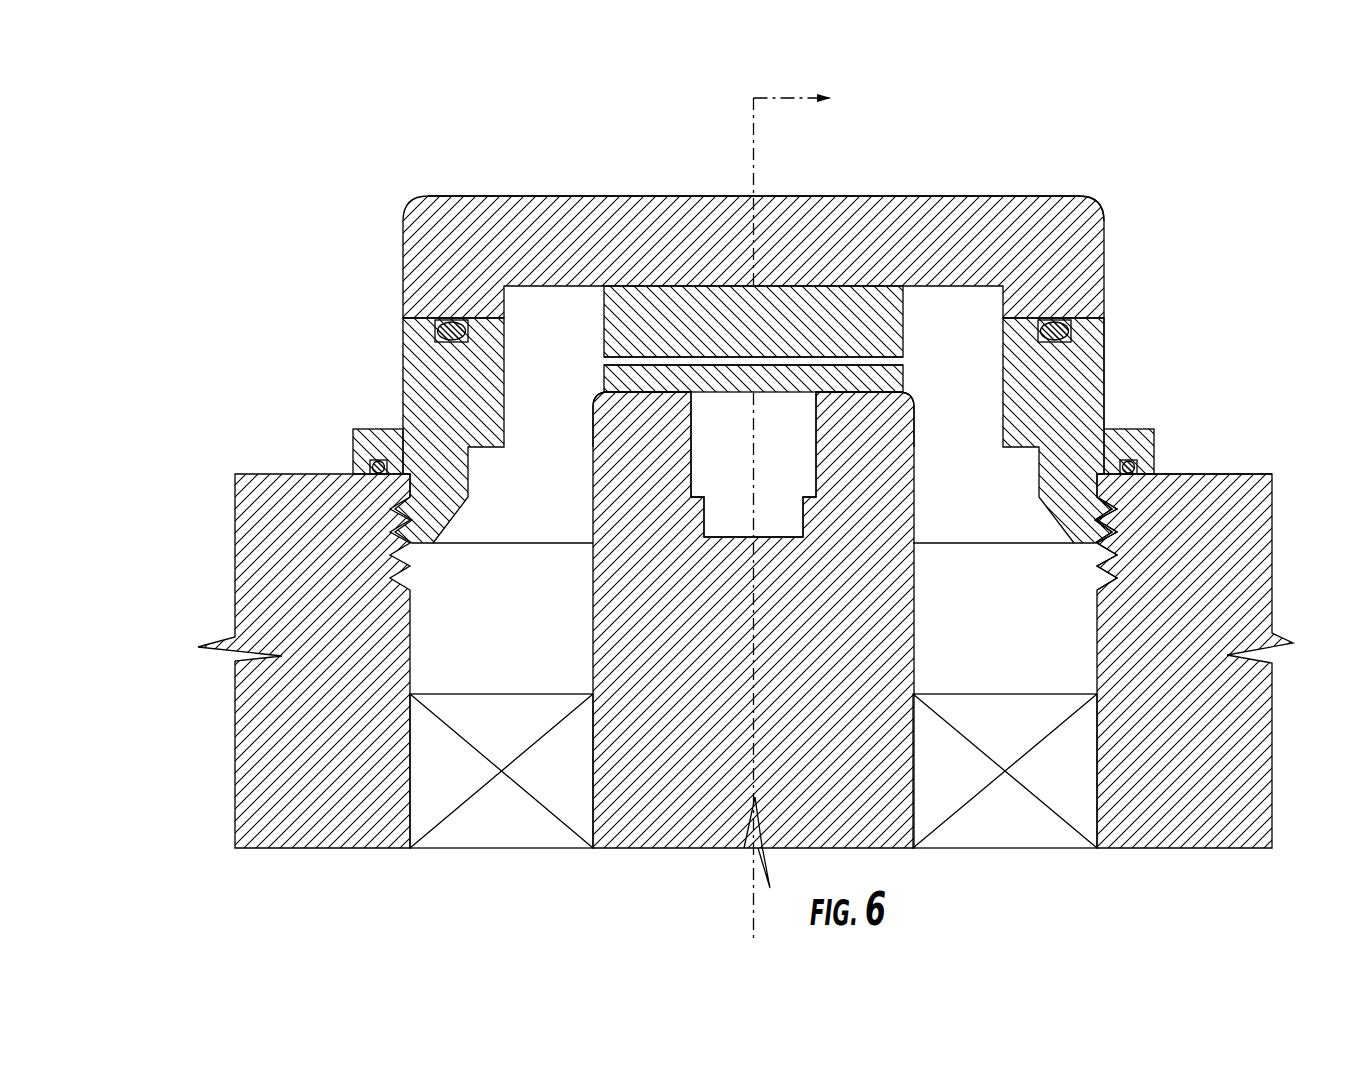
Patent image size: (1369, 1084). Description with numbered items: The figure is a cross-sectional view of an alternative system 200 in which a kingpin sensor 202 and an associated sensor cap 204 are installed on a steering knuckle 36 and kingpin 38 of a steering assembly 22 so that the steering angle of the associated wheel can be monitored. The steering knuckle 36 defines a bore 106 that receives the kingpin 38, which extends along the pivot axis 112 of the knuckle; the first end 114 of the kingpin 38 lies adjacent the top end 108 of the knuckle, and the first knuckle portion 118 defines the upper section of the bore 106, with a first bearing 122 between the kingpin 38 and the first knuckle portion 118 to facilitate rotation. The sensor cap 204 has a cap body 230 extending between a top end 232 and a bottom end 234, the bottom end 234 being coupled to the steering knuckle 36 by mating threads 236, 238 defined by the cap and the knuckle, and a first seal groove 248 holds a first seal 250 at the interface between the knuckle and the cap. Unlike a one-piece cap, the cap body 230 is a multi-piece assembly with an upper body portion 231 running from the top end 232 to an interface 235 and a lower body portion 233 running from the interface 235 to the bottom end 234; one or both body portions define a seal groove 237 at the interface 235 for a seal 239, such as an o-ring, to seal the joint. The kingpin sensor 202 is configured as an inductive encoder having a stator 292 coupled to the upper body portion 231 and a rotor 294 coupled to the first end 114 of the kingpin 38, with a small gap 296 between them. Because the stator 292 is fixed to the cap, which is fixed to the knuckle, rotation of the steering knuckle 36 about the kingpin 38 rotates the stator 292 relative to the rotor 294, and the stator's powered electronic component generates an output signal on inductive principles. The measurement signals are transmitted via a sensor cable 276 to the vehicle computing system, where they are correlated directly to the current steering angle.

The steering assembly 22 is at (136, 463).
The steering knuckle 36 is at (230, 583).
The kingpin 38 is at (675, 815).
The bore 106 is at (516, 608).
The top end 108 is at (1257, 473).
The pivot axis 112 is at (750, 905).
The first end 114 is at (868, 393).
The first knuckle portion 118 is at (1255, 710).
The first bearing 122 is at (1000, 836).
The system 200 is at (287, 170).
The kingpin sensor 202 is at (587, 336).
The sensor cap 204 is at (350, 380).
The cap body 230 is at (398, 290).
The upper body portion 231 is at (487, 225).
The top end 232 is at (1043, 195).
The lower body portion 233 is at (1094, 389).
The bottom end 234 is at (996, 543).
The interface 235 is at (433, 325).
The threads 236 is at (1100, 518).
The seal groove 237 is at (1082, 356).
The threads 238 is at (1104, 566).
The seal 239 is at (1074, 333).
The first seal groove 248 is at (378, 455).
The first seal 250 is at (368, 463).
The sensor cable 276 is at (752, 150).
The stator 292 is at (880, 318).
The rotor 294 is at (622, 382).
The gap 296 is at (908, 358).